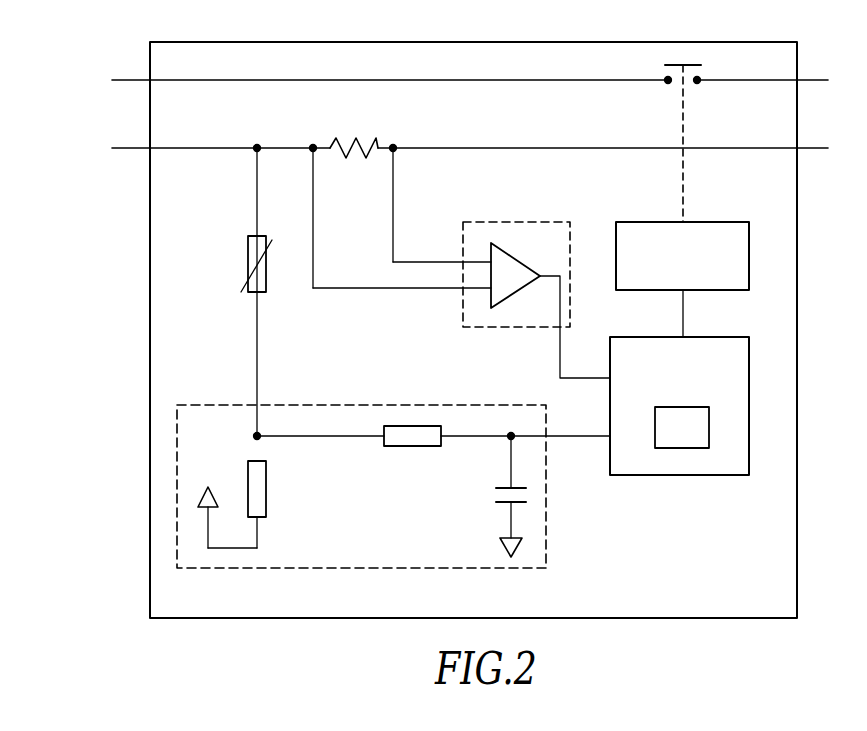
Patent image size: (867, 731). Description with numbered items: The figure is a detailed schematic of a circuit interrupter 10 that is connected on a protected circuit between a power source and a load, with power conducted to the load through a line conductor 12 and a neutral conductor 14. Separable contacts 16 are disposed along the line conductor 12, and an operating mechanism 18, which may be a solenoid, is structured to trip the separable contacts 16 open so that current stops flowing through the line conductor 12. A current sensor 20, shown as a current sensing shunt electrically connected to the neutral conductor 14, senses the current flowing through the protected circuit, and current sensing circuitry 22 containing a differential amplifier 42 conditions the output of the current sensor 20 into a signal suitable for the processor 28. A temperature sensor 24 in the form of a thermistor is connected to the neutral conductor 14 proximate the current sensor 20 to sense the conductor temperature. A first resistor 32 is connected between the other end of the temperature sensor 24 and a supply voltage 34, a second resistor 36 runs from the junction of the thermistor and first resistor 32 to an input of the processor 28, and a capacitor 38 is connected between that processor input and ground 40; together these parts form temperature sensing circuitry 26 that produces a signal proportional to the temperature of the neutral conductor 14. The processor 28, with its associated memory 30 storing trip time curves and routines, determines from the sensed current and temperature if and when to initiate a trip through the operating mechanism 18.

The circuit interrupter 10 is at (150, 438).
The line conductor 12 is at (265, 81).
The neutral conductor 14 is at (175, 148).
The separable contacts 16 is at (687, 86).
The operating mechanism 18 is at (716, 222).
The current sensor 20 is at (362, 165).
The current sensing circuitry 22 is at (520, 222).
The temperature sensor 24 is at (248, 250).
The temperature sensing circuitry 26 is at (365, 405).
The processor 28 is at (708, 475).
The memory 30 is at (655, 433).
The first resistor 32 is at (266, 483).
The supply voltage 34 is at (210, 487).
The second resistor 36 is at (400, 447).
The capacitor 38 is at (490, 496).
The ground 40 is at (500, 546).
The differential amplifier 42 is at (515, 296).